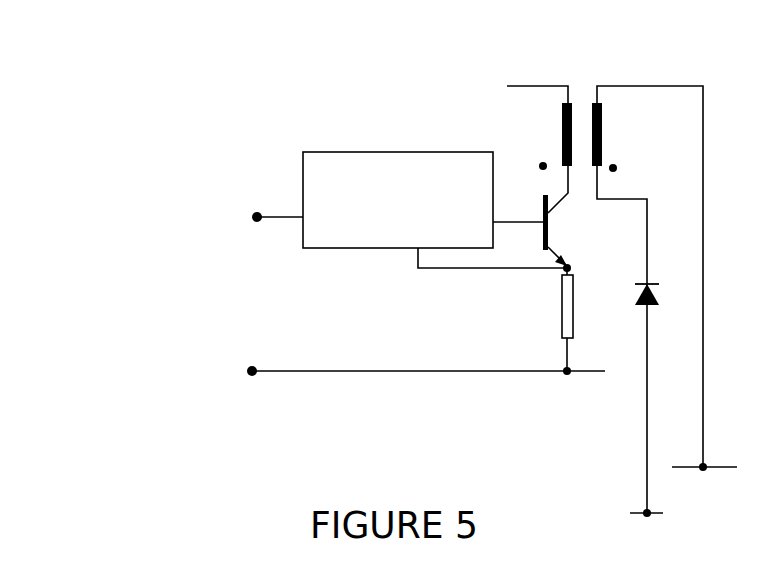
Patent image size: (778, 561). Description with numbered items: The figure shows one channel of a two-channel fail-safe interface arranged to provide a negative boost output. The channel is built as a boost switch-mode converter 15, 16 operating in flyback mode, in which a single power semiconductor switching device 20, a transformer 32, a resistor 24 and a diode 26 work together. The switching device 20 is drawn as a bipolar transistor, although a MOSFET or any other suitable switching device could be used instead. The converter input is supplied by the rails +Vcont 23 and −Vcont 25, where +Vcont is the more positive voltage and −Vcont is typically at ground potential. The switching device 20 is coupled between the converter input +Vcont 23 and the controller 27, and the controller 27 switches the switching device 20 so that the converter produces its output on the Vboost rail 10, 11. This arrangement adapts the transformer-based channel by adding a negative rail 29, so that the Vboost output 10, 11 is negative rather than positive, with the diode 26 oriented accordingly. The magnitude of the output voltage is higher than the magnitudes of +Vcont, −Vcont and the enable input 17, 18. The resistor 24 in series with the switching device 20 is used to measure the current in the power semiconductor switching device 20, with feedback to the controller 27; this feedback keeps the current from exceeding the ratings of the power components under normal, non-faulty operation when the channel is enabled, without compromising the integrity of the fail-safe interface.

The Vboost rail 10 is at (643, 532).
The Vboost rail 11 is at (643, 532).
The boost switch-mode converter 15 is at (160, 83).
The boost switch-mode converter 16 is at (280, 114).
The enable input 17 is at (151, 289).
The enable input 18 is at (206, 345).
The power semiconductor switching device 20 is at (580, 219).
The +Vcont rail 23 is at (605, 274).
The resistor 24 is at (545, 319).
The -Vcont rail 25 is at (426, 349).
The diode 26 is at (662, 315).
The controller 27 is at (409, 210).
The negative rail 29 is at (713, 445).
The transformer 32 is at (559, 142).